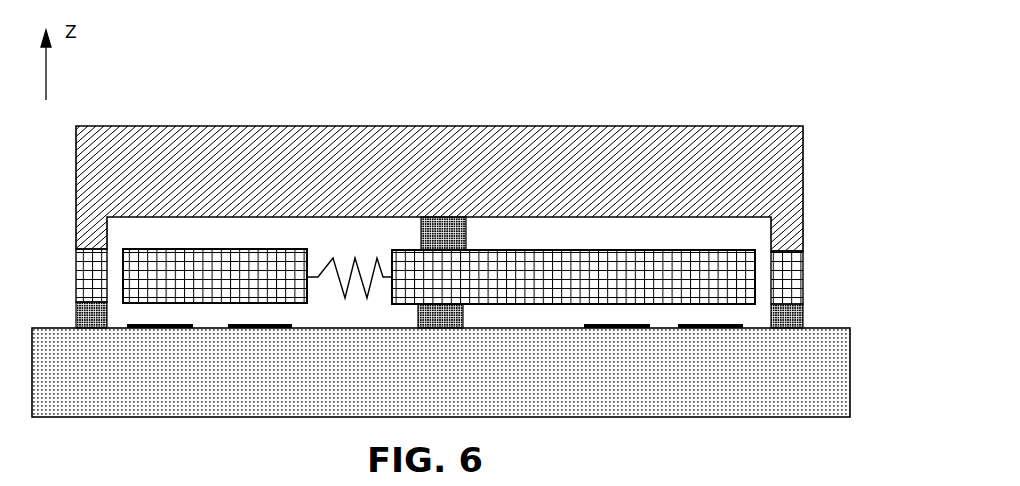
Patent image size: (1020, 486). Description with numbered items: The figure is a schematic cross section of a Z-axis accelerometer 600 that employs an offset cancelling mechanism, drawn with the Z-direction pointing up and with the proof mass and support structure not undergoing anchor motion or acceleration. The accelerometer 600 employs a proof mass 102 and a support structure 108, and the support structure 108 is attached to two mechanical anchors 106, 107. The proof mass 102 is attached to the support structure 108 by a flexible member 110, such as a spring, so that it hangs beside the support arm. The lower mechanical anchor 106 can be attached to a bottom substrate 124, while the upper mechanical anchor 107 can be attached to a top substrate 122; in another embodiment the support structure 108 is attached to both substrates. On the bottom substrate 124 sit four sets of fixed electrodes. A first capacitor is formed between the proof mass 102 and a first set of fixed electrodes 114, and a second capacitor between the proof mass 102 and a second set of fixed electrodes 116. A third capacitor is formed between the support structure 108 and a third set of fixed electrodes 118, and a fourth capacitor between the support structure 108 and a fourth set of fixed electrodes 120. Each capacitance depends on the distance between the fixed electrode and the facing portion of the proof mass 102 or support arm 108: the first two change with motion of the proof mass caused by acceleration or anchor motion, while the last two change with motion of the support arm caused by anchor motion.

The accelerometer 600 is at (677, 113).
The top substrate 122 is at (341, 137).
The proof mass 102 is at (212, 250).
The flexible member 110 is at (358, 260).
The mechanical anchor 107 is at (421, 229).
The support structure 108 is at (471, 298).
The mechanical anchor 106 is at (418, 317).
The bottom substrate 124 is at (364, 403).
The first set of fixed electrodes 114 is at (168, 330).
The second set of fixed electrodes 116 is at (262, 330).
The third set of fixed electrodes 118 is at (614, 330).
The fourth set of fixed electrodes 120 is at (704, 330).